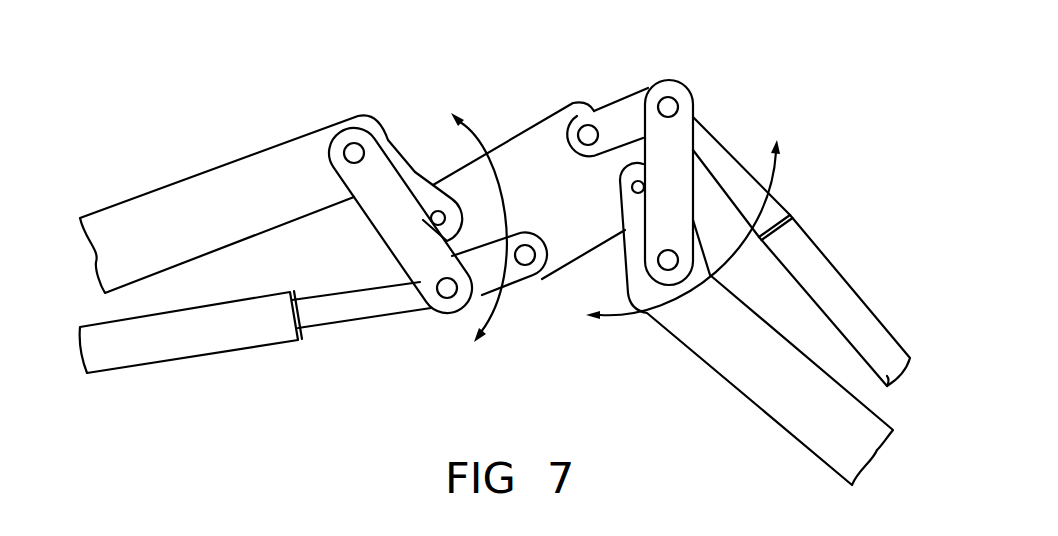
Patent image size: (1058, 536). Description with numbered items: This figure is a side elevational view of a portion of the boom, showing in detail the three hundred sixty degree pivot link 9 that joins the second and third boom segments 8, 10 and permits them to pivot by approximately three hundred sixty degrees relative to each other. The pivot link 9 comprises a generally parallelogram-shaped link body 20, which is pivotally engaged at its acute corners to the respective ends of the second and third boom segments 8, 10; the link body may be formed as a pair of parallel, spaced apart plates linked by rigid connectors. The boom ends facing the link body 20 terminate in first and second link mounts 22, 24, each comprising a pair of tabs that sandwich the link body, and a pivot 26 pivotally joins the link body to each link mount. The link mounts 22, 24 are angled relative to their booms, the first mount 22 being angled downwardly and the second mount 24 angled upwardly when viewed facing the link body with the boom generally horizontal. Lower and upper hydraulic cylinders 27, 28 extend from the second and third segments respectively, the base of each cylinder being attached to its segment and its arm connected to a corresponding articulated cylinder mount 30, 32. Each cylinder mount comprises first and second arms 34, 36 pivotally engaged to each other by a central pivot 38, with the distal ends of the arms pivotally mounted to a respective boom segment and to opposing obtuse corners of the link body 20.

The second boom segment 8 is at (185, 197).
The 360 degree pivot link 9 is at (484, 92).
The third boom segment 10 is at (783, 380).
The link body 20 is at (542, 138).
The first link mount 22 is at (386, 138).
The second link mount 24 is at (622, 257).
The pivot 26 is at (437, 217).
The lower hydraulic cylinder 27 is at (247, 327).
The upper hydraulic cylinder 28 is at (837, 288).
The articulated cylinder mount 30 is at (440, 312).
The articulated cylinder mount 32 is at (687, 88).
The first arm 34 is at (393, 217).
The second arm 36 is at (525, 287).
The central pivot 38 is at (450, 300).